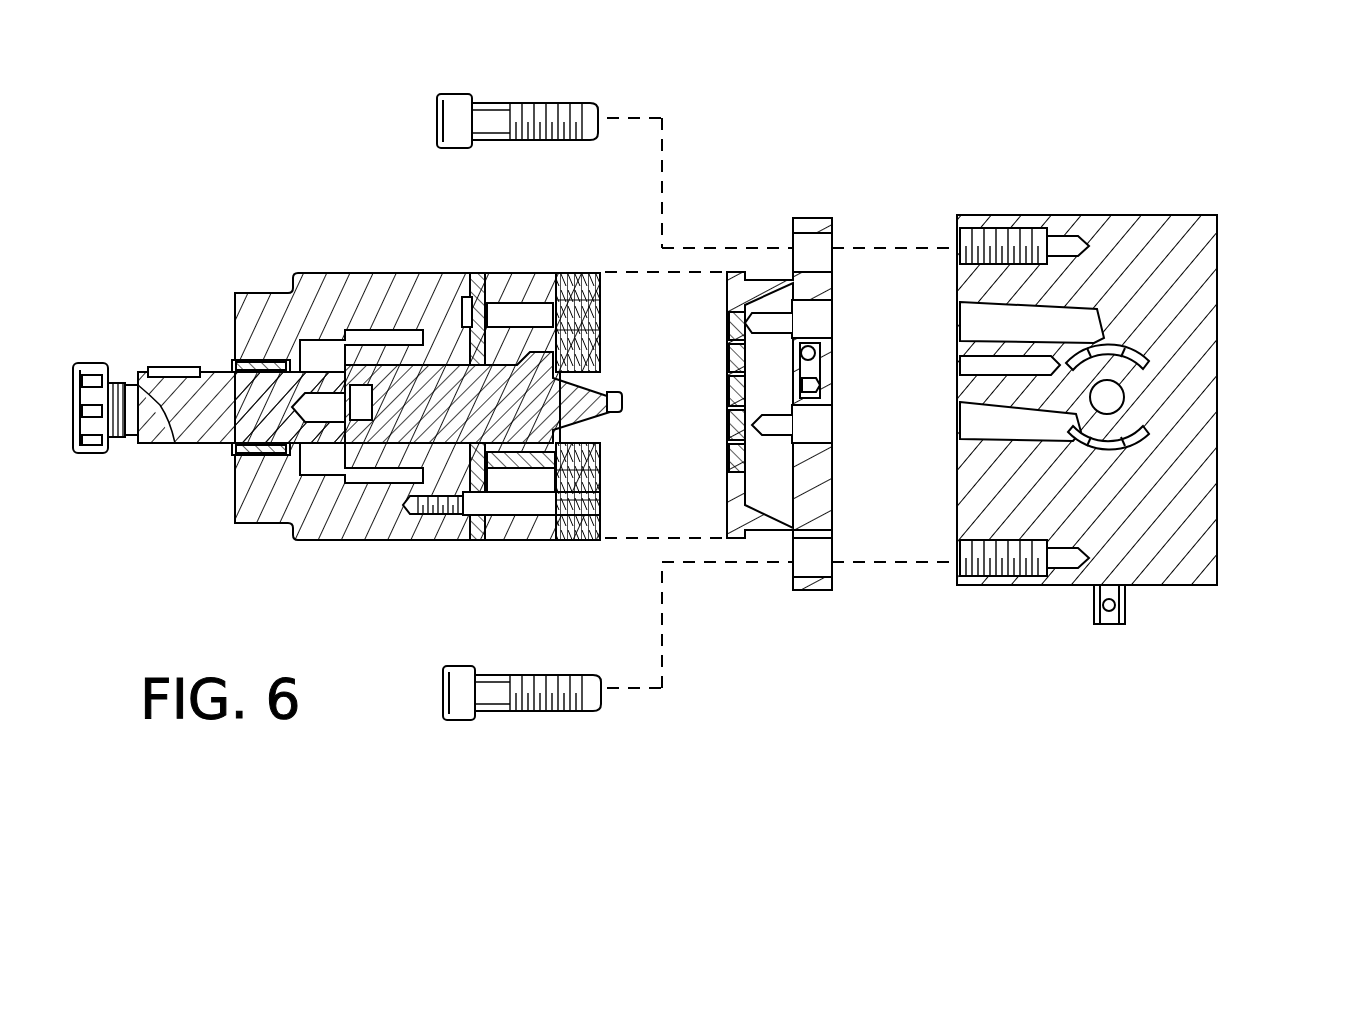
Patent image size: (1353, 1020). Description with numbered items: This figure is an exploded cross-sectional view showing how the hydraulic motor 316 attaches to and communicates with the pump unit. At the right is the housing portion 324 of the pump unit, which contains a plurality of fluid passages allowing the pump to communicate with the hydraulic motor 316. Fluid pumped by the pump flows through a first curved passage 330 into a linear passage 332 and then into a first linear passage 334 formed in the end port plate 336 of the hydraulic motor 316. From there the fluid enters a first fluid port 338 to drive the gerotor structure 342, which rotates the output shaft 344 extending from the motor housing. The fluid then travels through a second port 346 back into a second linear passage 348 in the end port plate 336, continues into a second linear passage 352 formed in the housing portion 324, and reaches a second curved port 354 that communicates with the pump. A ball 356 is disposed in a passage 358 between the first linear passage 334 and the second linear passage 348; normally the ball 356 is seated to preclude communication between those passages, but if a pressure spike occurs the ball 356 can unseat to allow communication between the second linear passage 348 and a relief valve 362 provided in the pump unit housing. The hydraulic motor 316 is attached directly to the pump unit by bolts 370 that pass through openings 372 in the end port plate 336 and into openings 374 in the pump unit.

The hydraulic motor 316 is at (505, 245).
The housing portion 324 is at (1170, 225).
The first curved passage 330 is at (1152, 456).
The linear passage 332 is at (963, 415).
The first linear passage 334 is at (812, 428).
The end port plate 336 is at (768, 290).
The first fluid port 338 is at (618, 408).
The gerotor structure 342 is at (523, 457).
The output shaft 344 is at (158, 430).
The second port 346 is at (596, 333).
The second linear passage 348 is at (810, 318).
The second linear passage 352 is at (963, 325).
The second curved port 354 is at (1150, 350).
The ball 356 is at (816, 353).
The passage 358 is at (820, 383).
The relief valve 362 is at (963, 364).
The bolts 370 is at (497, 700).
The openings 372 is at (806, 590).
The openings 374 is at (962, 575).